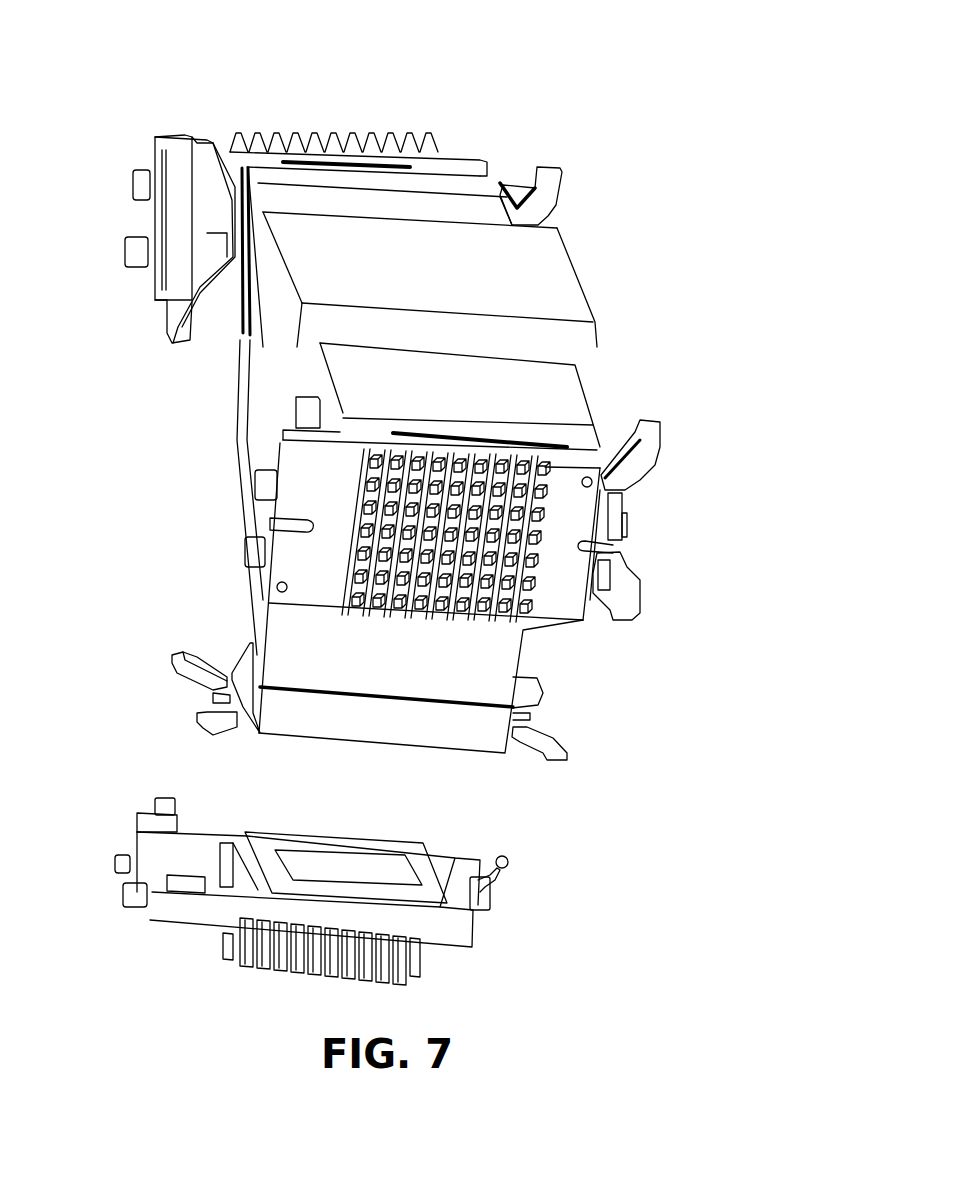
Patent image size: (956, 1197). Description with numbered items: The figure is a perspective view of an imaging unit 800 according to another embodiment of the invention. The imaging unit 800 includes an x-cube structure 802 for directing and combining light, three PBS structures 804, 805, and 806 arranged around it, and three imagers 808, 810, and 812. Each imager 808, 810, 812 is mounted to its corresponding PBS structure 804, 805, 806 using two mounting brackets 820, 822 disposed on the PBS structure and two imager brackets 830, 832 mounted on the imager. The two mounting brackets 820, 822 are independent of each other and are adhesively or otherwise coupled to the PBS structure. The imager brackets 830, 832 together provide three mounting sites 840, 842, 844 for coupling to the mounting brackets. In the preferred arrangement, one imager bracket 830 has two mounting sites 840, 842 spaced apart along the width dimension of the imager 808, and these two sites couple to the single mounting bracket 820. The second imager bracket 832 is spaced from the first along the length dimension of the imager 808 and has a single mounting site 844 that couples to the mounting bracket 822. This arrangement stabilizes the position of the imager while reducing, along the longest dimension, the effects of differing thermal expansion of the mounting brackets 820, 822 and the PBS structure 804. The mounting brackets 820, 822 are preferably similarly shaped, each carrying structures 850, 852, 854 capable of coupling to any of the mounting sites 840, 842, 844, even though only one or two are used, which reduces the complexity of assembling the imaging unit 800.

The imaging unit 800 is at (467, 66).
The x-cube structure 802 is at (580, 280).
The PBS structure 804 is at (517, 652).
The PBS structure 805 is at (587, 405).
The PBS structure 806 is at (500, 187).
The imager 808 is at (450, 950).
The imager 810 is at (658, 449).
The imager 812 is at (437, 157).
The mounting bracket 820 is at (172, 656).
The mounting bracket 822 is at (567, 745).
The imager bracket 830 is at (137, 821).
The imager bracket 832 is at (505, 872).
The mounting site 840 is at (160, 797).
The mounting site 842 is at (195, 893).
The mounting site 844 is at (508, 857).
The coupling structure 850 is at (200, 720).
The coupling structure 852 is at (213, 697).
The coupling structure 854 is at (200, 655).